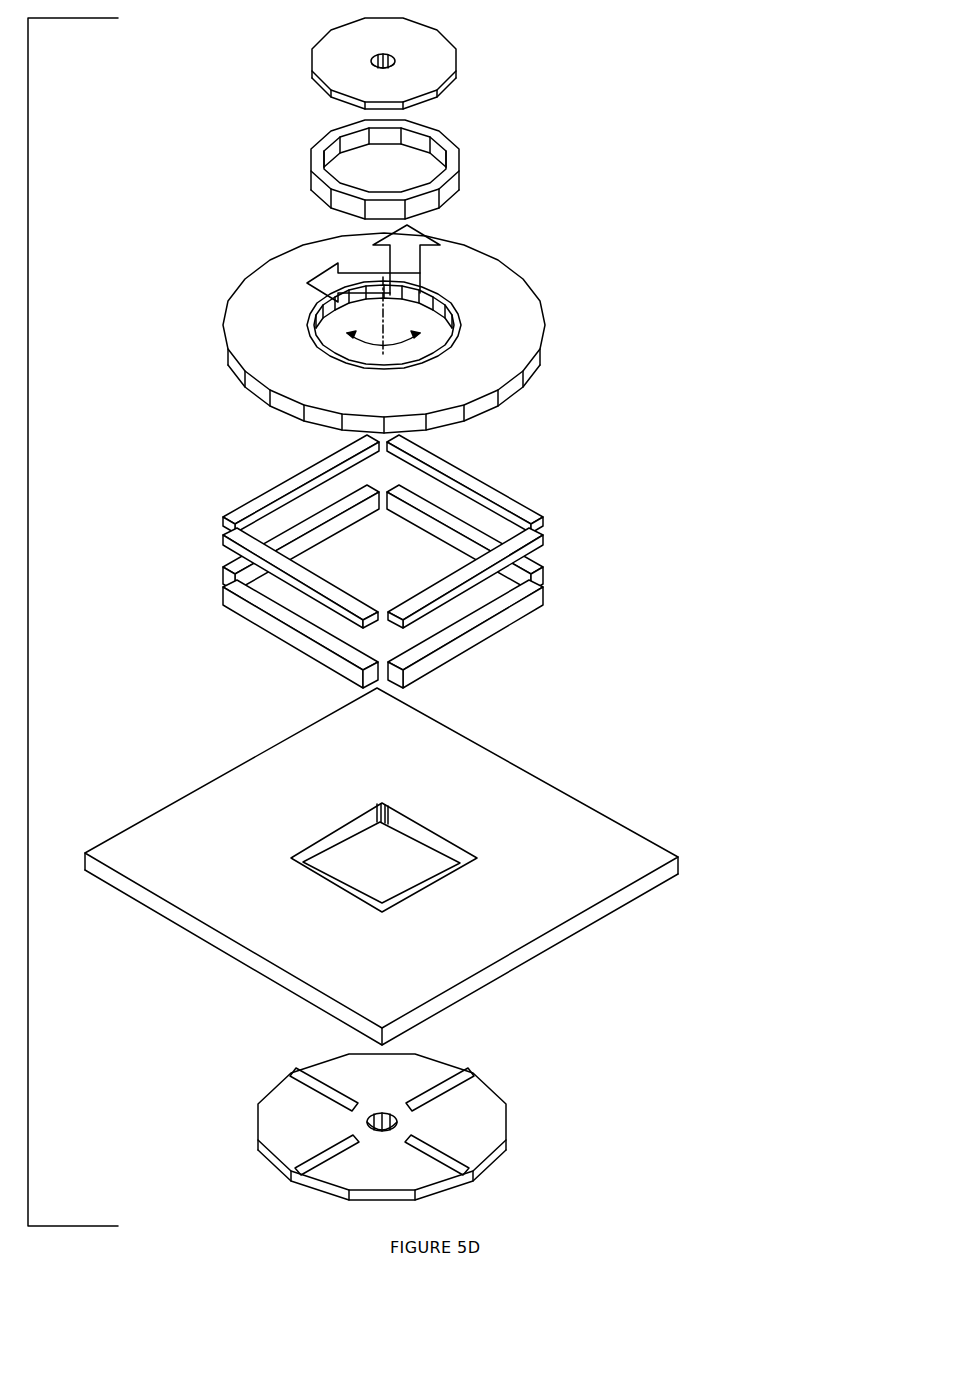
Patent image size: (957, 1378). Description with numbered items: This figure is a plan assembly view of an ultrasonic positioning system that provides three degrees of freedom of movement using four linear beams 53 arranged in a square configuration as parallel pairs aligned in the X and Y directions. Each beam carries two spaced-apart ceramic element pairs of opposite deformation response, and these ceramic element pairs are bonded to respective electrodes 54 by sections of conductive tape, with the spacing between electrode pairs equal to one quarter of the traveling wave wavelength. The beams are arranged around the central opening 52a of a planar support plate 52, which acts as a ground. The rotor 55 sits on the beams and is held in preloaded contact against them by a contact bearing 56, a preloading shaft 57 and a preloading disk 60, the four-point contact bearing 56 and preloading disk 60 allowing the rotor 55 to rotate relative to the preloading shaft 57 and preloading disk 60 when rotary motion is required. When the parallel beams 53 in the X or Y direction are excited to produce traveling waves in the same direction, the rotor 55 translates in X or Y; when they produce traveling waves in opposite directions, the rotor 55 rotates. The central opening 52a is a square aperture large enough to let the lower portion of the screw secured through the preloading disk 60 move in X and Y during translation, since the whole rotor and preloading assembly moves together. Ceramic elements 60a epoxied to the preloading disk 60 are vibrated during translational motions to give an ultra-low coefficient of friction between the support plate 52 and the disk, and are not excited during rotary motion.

The preloading shaft 57 is at (465, 70).
The contact bearing 56 is at (470, 150).
The rotor 55 is at (522, 275).
The electrodes 54 is at (520, 497).
The linear beams 53 is at (497, 637).
The support plate 52 is at (381, 866).
The central opening 52a is at (336, 825).
The preloading disk 60 is at (465, 1107).
The ceramic elements 60a is at (460, 1080).